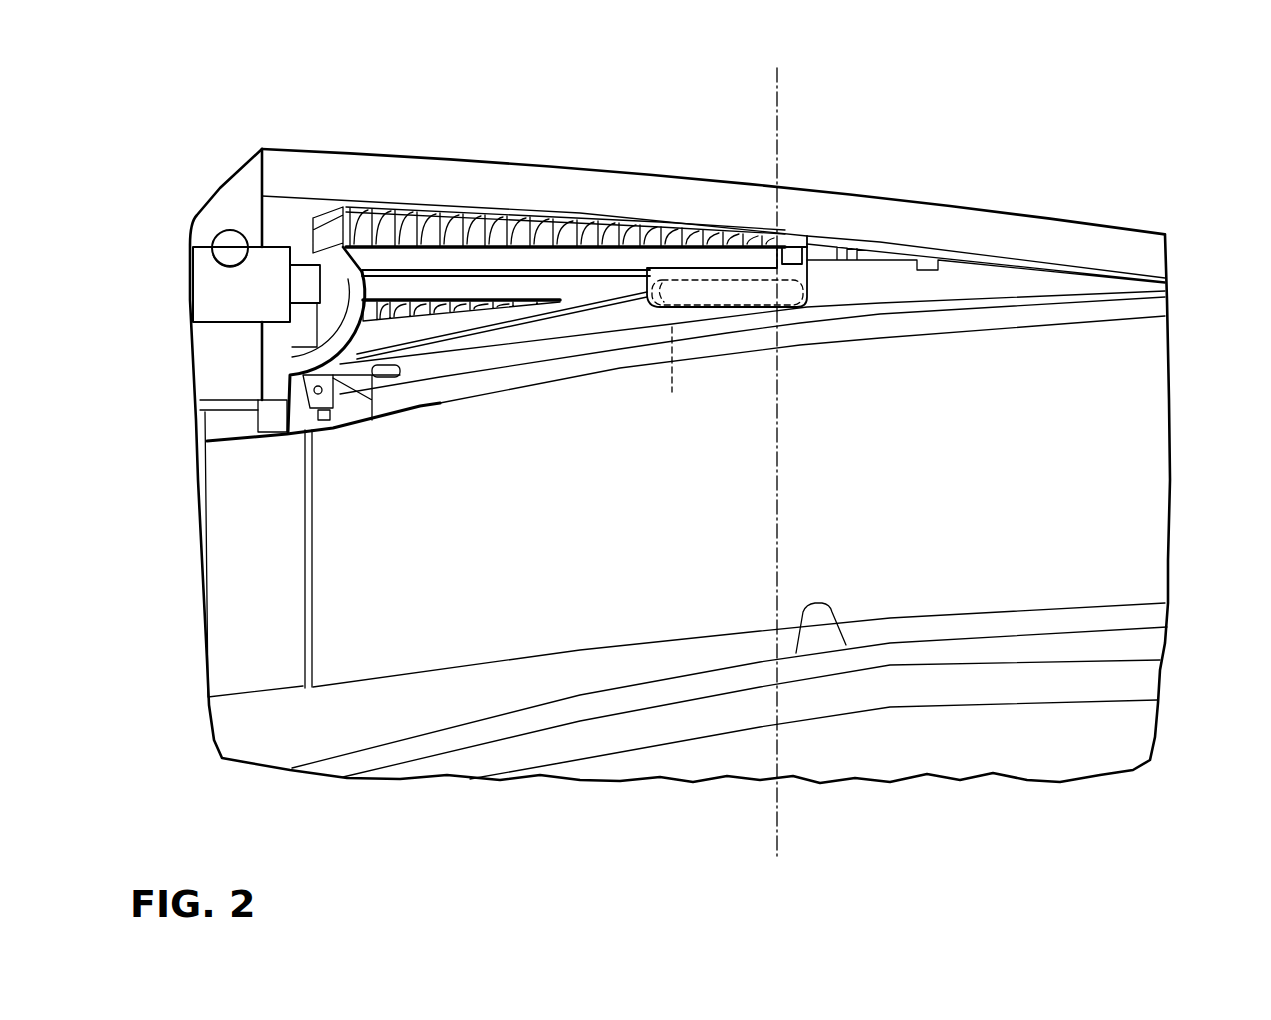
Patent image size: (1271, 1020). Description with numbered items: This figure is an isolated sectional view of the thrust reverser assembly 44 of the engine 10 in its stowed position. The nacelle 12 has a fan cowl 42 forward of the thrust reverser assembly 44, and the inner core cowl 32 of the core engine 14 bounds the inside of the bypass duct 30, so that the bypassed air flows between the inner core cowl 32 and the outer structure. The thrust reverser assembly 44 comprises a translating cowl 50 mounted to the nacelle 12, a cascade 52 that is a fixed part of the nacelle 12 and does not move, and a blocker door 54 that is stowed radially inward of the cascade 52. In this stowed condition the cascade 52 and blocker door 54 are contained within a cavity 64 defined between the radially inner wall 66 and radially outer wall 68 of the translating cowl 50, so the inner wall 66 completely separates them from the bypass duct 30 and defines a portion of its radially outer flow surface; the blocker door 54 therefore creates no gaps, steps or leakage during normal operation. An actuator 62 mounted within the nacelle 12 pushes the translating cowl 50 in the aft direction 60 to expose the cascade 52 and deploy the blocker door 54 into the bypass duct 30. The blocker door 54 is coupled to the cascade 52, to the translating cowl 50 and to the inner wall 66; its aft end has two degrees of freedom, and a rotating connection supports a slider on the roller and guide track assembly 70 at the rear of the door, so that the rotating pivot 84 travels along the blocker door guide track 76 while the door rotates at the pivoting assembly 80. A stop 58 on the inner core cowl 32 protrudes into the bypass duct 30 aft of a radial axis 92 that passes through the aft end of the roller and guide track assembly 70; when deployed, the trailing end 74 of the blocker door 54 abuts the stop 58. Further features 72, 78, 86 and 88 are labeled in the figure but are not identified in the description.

The engine 10 is at (1030, 187).
The nacelle 12 is at (912, 192).
The core engine 14 is at (923, 742).
The bypass duct 30 is at (523, 689).
The inner core cowl 32 is at (492, 722).
The fan cowl 42 is at (230, 663).
The thrust reverser assembly 44 is at (557, 200).
The translating cowl 50 is at (688, 178).
The cascade 52 is at (432, 210).
The blocker door 54 is at (457, 323).
The stop 58 is at (832, 617).
The aft direction 60 is at (336, 85).
The actuator 62 is at (230, 243).
The cavity 64 is at (868, 263).
The radially inner wall 66 is at (440, 393).
The radially outer wall 68 is at (805, 212).
The roller and guide track assembly 70 is at (727, 337).
The gap 72 is at (670, 374).
The trailing end 74 is at (742, 315).
The blocker door guide track 76 is at (693, 303).
The forward hinge 78 is at (323, 428).
The pivoting assembly 80 is at (363, 427).
The rotating pivot 84 is at (333, 375).
The inner sleeve wall 86 is at (562, 327).
The lower cascade 88 is at (545, 300).
The radial axis 92 is at (775, 115).